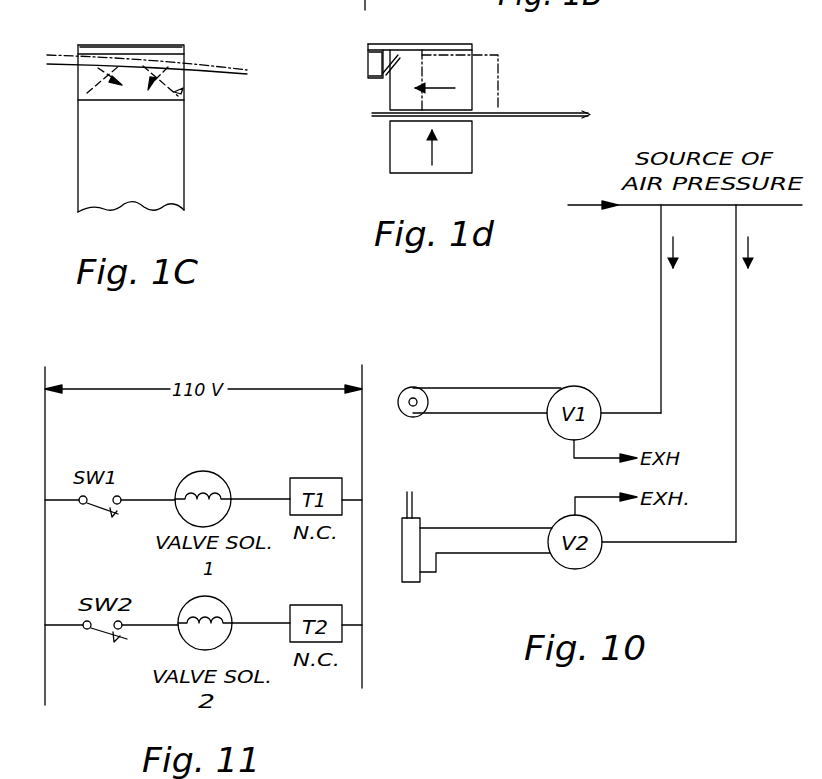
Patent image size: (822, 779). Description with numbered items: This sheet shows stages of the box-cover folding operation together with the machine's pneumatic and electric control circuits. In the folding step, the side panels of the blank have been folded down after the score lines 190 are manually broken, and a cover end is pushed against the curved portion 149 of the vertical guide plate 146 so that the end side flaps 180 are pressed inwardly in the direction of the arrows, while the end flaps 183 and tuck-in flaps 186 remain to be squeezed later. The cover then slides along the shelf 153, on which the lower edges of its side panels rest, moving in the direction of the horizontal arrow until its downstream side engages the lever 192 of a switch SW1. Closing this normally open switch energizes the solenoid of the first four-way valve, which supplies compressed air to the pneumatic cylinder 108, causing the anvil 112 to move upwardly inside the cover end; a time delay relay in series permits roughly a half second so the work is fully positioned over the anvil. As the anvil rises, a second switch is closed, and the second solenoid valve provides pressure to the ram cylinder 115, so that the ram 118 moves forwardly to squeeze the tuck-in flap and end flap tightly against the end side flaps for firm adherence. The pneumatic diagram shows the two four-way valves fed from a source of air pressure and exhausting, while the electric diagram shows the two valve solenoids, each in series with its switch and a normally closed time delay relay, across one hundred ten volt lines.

In FIG. 1C, the vertical guide plate 146 is at (63, 28).
In FIG. 1C, the curved portion 149 is at (240, 68).
In FIG. 1C, the tuck-in flaps 186 is at (108, 51).
In FIG. 1C, the end flaps 183 is at (78, 80).
In FIG. 1C, the end side flaps 180 is at (186, 90).
In FIG. 1C, the score lines 190 is at (142, 152).
In FIG. 1D, the ram 118 is at (416, 58).
In FIG. 1D, the switch SW1 is at (368, 73).
In FIG. 1D, the lever 192 is at (397, 67).
In FIG. 1D, the shelf 153 is at (512, 112).
In FIG. 1D, the anvil 112 is at (401, 150).
In FIG. 10, the ram cylinder 115 is at (418, 388).
In FIG. 10, the pneumatic cylinder 108 is at (411, 576).